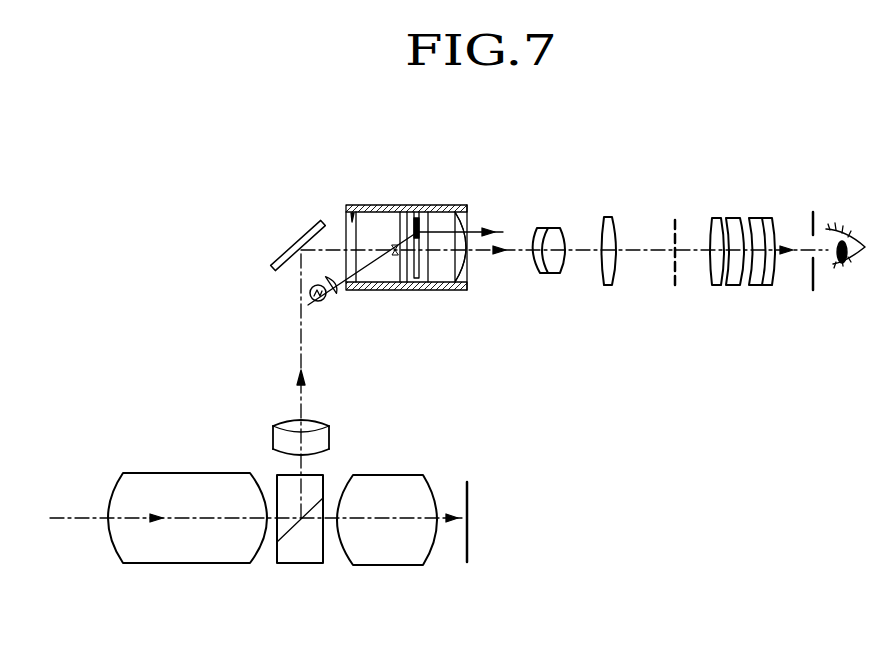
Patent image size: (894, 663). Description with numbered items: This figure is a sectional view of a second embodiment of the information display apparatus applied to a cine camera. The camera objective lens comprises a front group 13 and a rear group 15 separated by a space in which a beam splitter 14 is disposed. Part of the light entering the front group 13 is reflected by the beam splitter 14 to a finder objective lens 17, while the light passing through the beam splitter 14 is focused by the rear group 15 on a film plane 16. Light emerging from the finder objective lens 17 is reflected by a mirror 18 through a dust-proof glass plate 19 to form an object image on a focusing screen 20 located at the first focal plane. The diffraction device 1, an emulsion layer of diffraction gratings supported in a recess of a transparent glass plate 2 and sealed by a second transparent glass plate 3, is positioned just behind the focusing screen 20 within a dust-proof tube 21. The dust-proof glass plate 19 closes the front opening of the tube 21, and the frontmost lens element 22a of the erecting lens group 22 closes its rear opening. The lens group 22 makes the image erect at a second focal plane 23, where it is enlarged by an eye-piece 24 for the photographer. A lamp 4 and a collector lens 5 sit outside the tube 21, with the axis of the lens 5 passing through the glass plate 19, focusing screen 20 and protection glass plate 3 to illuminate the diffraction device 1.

The diffraction device 1 is at (420, 225).
The transparent glass plate 2 is at (428, 283).
The second transparent glass plate 3 is at (414, 283).
The illumination light source 4 is at (319, 301).
The collector lens 5 is at (336, 290).
The front group 13 is at (198, 476).
The beam splitter 14 is at (305, 565).
The rear group 15 is at (384, 479).
The film plane 16 is at (469, 497).
The finder objective lens 17 is at (323, 427).
The mirror 18 is at (316, 222).
The dust-proof glass plate 19 is at (357, 210).
The focusing screen 20 is at (407, 205).
The dust-proof tube 21 is at (461, 290).
The erecting lens group 22 is at (615, 192).
The frontmost lens element 22a is at (462, 272).
The second focal plane 23 is at (676, 218).
The eye-piece 24 is at (780, 197).